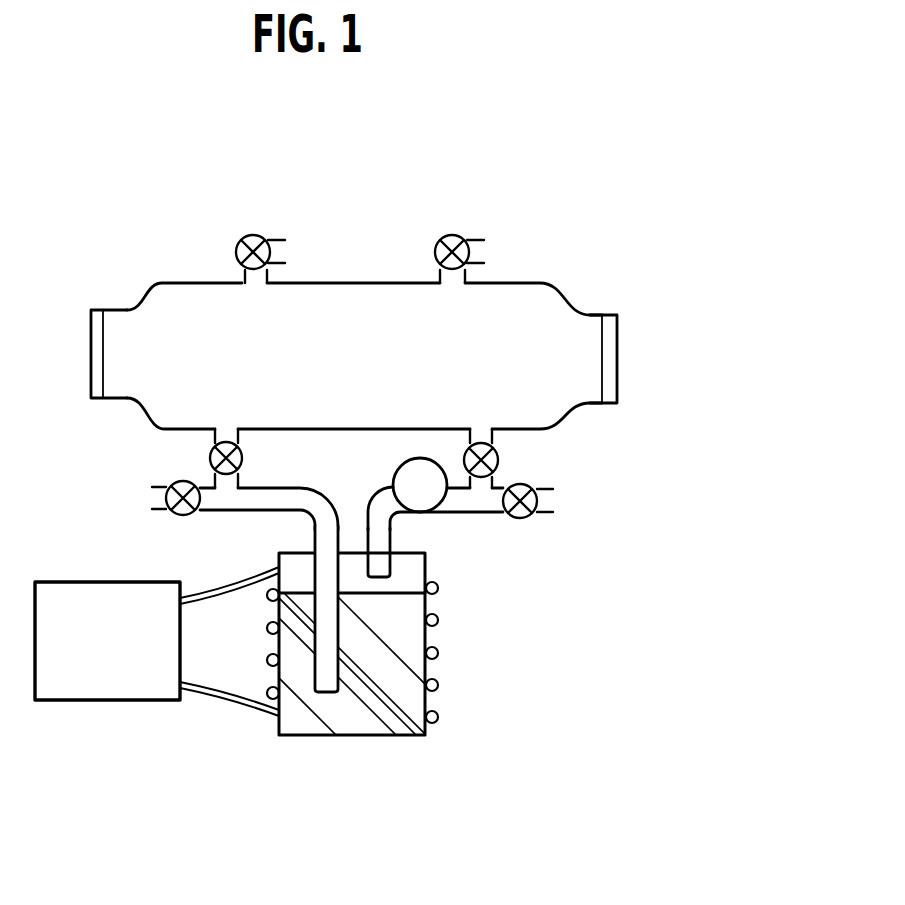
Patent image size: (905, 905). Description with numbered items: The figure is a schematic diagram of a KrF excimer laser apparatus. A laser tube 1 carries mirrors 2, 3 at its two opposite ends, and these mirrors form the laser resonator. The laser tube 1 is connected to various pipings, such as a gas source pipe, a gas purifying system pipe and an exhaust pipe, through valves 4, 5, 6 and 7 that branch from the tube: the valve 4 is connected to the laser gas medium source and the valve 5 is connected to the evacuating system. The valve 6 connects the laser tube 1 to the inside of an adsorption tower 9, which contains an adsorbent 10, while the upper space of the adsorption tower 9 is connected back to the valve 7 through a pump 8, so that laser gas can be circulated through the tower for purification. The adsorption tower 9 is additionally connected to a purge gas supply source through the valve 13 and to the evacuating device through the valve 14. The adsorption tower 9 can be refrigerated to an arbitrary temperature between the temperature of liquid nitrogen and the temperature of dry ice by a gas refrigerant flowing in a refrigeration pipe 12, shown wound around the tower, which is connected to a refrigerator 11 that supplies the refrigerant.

The laser tube 1 is at (563, 298).
The mirror 2 is at (98, 318).
The mirror 3 is at (609, 318).
The valve 4 is at (258, 237).
The valve 5 is at (458, 237).
The valve 6 is at (243, 458).
The valve 7 is at (501, 462).
The pump 8 is at (394, 467).
The adsorption tower 9 is at (441, 567).
The adsorbent 10 is at (377, 726).
The refrigerator 11 is at (92, 582).
The refrigeration pipe 12 is at (440, 621).
The valve 13 is at (184, 481).
The valve 14 is at (523, 519).